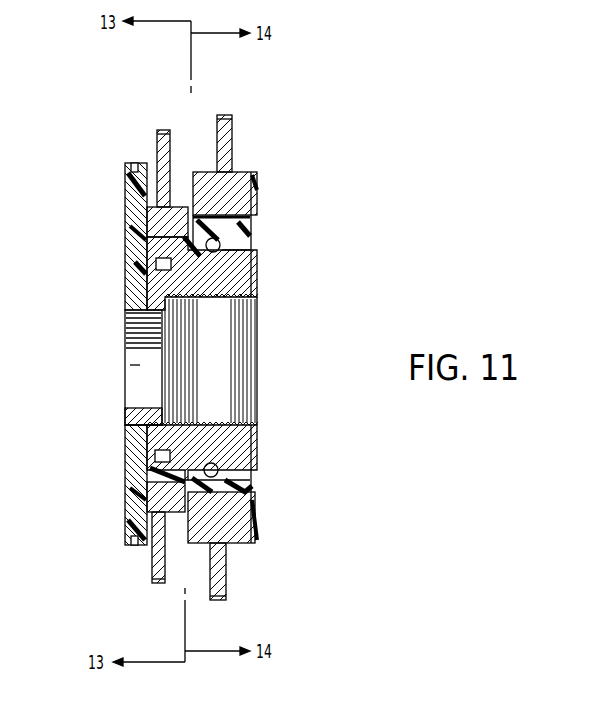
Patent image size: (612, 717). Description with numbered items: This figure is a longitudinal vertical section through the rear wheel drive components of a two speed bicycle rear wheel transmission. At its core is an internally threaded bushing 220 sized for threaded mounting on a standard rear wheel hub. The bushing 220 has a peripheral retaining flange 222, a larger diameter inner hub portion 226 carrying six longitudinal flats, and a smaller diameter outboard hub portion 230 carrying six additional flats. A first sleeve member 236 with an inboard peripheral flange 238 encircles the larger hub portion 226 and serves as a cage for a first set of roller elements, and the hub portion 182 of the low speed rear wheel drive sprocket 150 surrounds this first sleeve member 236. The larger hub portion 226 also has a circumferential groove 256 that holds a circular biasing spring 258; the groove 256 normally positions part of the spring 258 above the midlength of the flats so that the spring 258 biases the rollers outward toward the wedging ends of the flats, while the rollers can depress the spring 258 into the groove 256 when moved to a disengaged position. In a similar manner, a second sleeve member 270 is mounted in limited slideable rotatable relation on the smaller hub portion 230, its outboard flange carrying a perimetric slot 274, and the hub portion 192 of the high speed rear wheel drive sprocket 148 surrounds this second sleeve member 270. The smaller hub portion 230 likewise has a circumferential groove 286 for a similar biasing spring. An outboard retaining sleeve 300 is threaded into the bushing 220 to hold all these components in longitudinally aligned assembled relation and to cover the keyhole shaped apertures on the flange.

The high speed rear wheel drive sprocket 148 is at (147, 147).
The low speed rear wheel drive sprocket 150 is at (239, 123).
The hub portion 182 is at (246, 234).
The hub portion 192 is at (129, 223).
The internally threaded bushing 220 is at (251, 234).
The peripheral retaining flange 222 is at (249, 486).
The hub portion 226 is at (247, 258).
The hub portion 230 is at (106, 270).
The first sleeve member 236 is at (230, 460).
The inboard peripheral flange 238 is at (249, 512).
The circumferential groove 256 is at (229, 331).
The circular biasing spring 258 is at (228, 445).
The second sleeve member 270 is at (105, 485).
The perimetric slot 274 is at (117, 220).
The circumferential groove 286 is at (119, 431).
The outboard retaining sleeve 300 is at (113, 361).